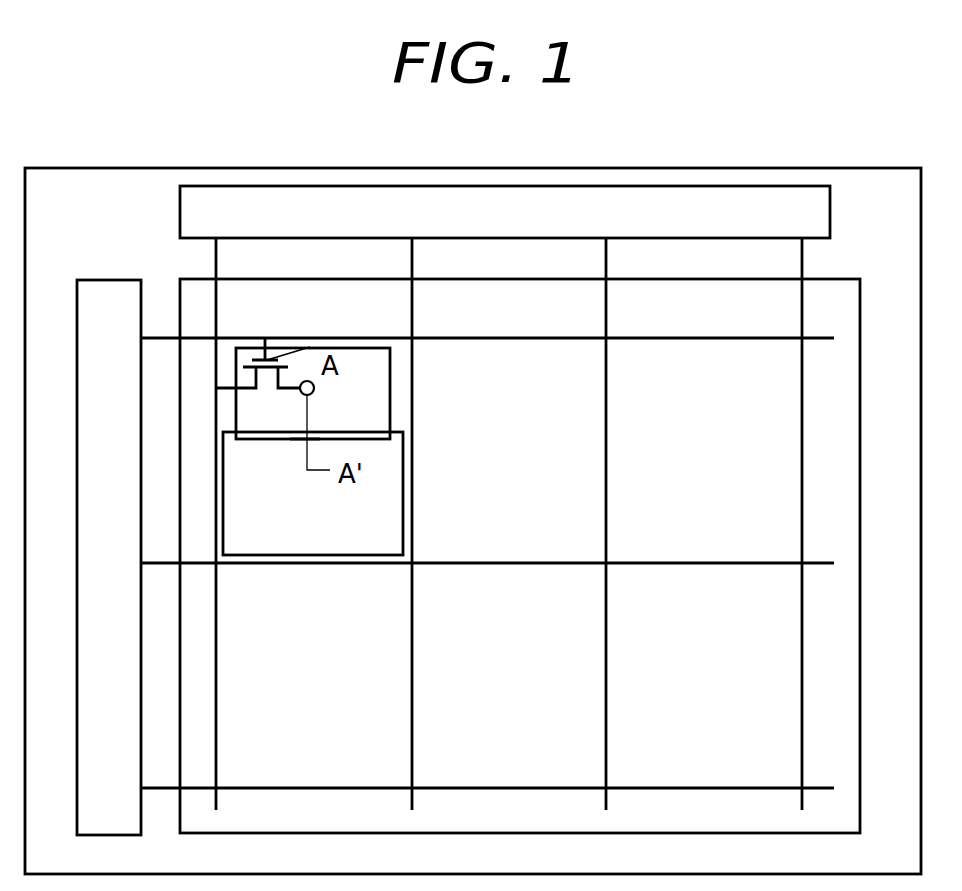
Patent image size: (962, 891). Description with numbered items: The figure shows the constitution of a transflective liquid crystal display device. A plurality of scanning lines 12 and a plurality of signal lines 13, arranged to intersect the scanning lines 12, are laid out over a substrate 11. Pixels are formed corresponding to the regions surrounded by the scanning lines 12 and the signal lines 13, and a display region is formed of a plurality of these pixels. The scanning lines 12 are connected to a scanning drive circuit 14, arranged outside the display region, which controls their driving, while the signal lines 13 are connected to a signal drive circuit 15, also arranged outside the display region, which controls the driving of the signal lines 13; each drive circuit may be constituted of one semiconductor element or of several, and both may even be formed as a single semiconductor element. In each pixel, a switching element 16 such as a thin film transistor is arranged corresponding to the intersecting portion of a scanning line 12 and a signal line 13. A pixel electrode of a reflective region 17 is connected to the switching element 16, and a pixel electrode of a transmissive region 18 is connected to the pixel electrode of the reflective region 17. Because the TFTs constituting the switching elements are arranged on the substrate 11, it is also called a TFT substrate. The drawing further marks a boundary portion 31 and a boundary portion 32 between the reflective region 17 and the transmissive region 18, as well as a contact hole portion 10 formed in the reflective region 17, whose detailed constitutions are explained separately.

The contact hole portion 10 is at (315, 390).
The substrate 11 is at (745, 177).
The scanning lines 12 is at (697, 562).
The signal lines 13 is at (412, 658).
The scanning drive circuit 14 is at (85, 545).
The signal drive circuit 15 is at (810, 218).
The switching element 16 is at (255, 352).
The reflective region 17 is at (378, 380).
The transmissive region 18 is at (392, 502).
The boundary portion 31 is at (297, 447).
The boundary portion 32 is at (317, 338).